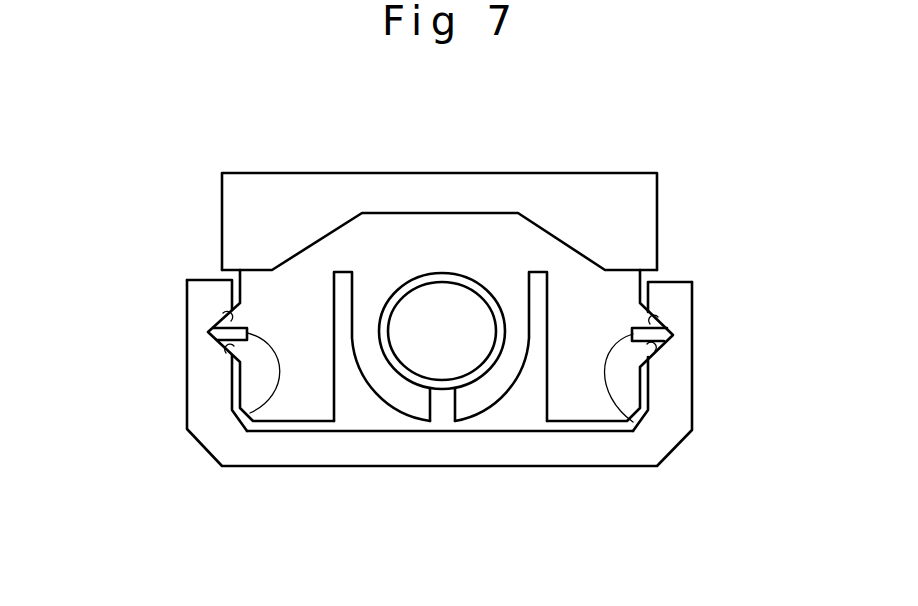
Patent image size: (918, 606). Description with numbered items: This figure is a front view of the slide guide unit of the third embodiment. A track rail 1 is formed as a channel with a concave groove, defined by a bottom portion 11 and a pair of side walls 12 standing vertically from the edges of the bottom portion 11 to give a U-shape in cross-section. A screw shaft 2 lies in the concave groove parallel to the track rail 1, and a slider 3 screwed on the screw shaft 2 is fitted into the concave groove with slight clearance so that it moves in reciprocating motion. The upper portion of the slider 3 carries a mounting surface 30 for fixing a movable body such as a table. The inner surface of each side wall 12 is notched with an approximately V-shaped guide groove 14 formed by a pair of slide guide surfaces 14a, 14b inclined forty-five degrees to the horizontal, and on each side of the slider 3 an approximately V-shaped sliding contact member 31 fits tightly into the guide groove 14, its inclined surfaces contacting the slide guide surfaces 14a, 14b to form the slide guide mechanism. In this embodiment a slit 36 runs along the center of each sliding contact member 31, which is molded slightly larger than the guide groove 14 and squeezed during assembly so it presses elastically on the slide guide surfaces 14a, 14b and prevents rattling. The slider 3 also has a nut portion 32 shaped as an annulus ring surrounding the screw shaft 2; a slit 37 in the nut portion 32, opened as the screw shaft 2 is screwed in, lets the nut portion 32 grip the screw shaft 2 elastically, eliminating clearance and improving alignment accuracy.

The track rail 1 is at (610, 468).
The screw shaft 2 is at (443, 292).
The slider 3 is at (667, 163).
The bottom portion 11 is at (333, 468).
The side wall 12 is at (205, 295).
The guide groove 14 is at (90, 317).
The slide guide surface 14a is at (225, 320).
The slide guide surface 14b is at (228, 349).
The mounting surface 30 is at (318, 173).
The sliding contact member 31 is at (247, 313).
The nut portion 32 is at (487, 395).
The slit 36 is at (250, 414).
The slit 37 is at (443, 413).